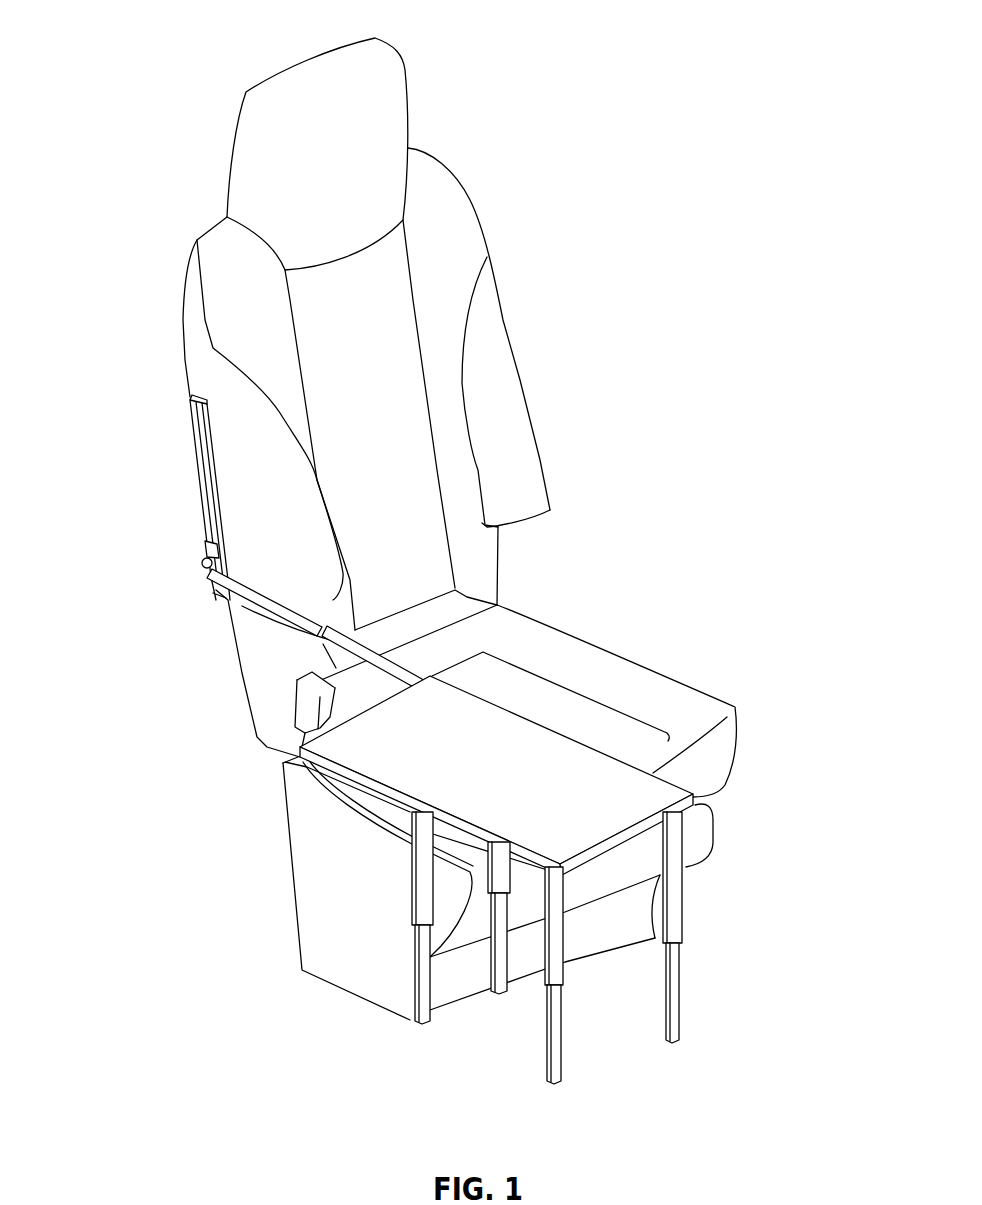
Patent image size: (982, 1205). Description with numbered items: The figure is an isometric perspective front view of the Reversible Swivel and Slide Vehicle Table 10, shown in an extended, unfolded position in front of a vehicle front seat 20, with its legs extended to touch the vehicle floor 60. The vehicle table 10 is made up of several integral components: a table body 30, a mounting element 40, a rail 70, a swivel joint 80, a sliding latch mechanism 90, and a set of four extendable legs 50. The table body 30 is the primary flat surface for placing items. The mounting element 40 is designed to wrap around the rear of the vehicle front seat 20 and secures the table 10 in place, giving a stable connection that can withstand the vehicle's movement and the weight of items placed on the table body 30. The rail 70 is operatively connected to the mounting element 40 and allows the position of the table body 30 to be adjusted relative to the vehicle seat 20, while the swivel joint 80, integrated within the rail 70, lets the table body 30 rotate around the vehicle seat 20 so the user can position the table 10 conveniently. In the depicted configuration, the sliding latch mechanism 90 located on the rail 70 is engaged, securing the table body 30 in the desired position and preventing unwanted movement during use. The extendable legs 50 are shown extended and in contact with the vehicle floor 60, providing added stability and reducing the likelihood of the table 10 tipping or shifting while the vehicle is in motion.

The Reversible Swivel and Slide Vehicle Table 10 is at (428, 507).
The vehicle front seat 20 is at (228, 170).
The table body 30 is at (367, 763).
The mounting element 40 is at (203, 488).
The extendable legs 50 is at (675, 972).
The vehicle floor 60 is at (498, 1078).
The rail 70 is at (295, 622).
The swivel joint 80 is at (207, 563).
The sliding latch mechanism 90 is at (207, 555).